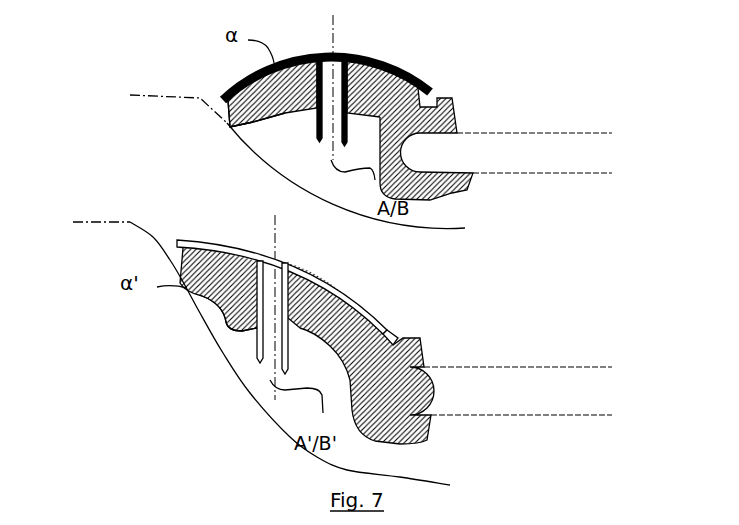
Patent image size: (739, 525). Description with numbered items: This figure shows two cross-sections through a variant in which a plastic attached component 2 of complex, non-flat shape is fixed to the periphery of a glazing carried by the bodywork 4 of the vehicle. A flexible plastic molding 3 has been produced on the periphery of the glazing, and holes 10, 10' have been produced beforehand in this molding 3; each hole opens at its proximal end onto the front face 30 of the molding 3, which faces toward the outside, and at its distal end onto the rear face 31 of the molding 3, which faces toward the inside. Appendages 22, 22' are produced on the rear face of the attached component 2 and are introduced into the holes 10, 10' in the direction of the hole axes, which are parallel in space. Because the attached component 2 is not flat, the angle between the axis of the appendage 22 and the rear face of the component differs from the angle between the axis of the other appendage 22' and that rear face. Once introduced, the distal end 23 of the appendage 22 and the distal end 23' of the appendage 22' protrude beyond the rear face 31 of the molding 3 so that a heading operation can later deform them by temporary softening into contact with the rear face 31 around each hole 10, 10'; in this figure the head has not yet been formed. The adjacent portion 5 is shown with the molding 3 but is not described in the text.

The attached component 2 is at (307, 183).
The molding 3 is at (456, 121).
The bodywork 4 is at (147, 95).
The channel 5 is at (562, 150).
The hole 10 is at (214, 119).
The hole 10' is at (167, 317).
The appendage 22 is at (355, 91).
The appendage 22' is at (289, 315).
The distal end 23 is at (302, 137).
The distal end 23' is at (248, 340).
The front face 30 is at (380, 331).
The rear face 31 is at (242, 132).